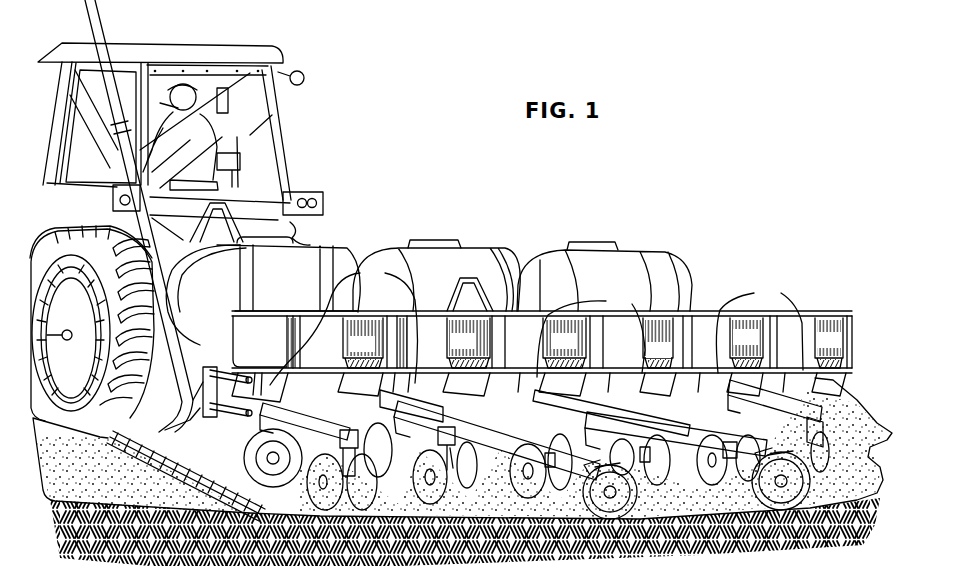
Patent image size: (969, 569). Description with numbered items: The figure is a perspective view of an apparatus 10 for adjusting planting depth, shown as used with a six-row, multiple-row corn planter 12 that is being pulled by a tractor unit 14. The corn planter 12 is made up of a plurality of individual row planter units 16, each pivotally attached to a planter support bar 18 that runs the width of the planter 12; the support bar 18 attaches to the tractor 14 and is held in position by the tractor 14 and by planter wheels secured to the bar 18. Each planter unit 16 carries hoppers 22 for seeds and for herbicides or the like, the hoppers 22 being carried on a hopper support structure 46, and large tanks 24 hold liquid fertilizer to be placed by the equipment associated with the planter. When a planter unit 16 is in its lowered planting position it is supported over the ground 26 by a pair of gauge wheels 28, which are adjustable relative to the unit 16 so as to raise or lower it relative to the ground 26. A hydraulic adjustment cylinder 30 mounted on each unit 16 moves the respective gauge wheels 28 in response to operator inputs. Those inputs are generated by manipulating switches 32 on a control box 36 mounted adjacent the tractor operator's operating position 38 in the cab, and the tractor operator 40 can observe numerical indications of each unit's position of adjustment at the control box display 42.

The apparatus 10 is at (728, 220).
The multiple-row corn planter 12 is at (731, 275).
The tractor unit 14 is at (332, 126).
The row planter unit 16 is at (364, 520).
The planter support bar 18 is at (205, 367).
The hopper 22 is at (249, 344).
The tank 24 is at (272, 283).
The ground 26 is at (119, 490).
The gauge wheel 28 is at (246, 446).
The hydraulic adjustment cylinder 30 is at (288, 410).
The switch 32 is at (222, 174).
The control box 36 is at (246, 146).
The tractor operator's operating position 38 is at (84, 113).
The tractor operator 40 is at (182, 157).
The control box display 42 is at (217, 173).
The hopper support structure 46 is at (536, 323).